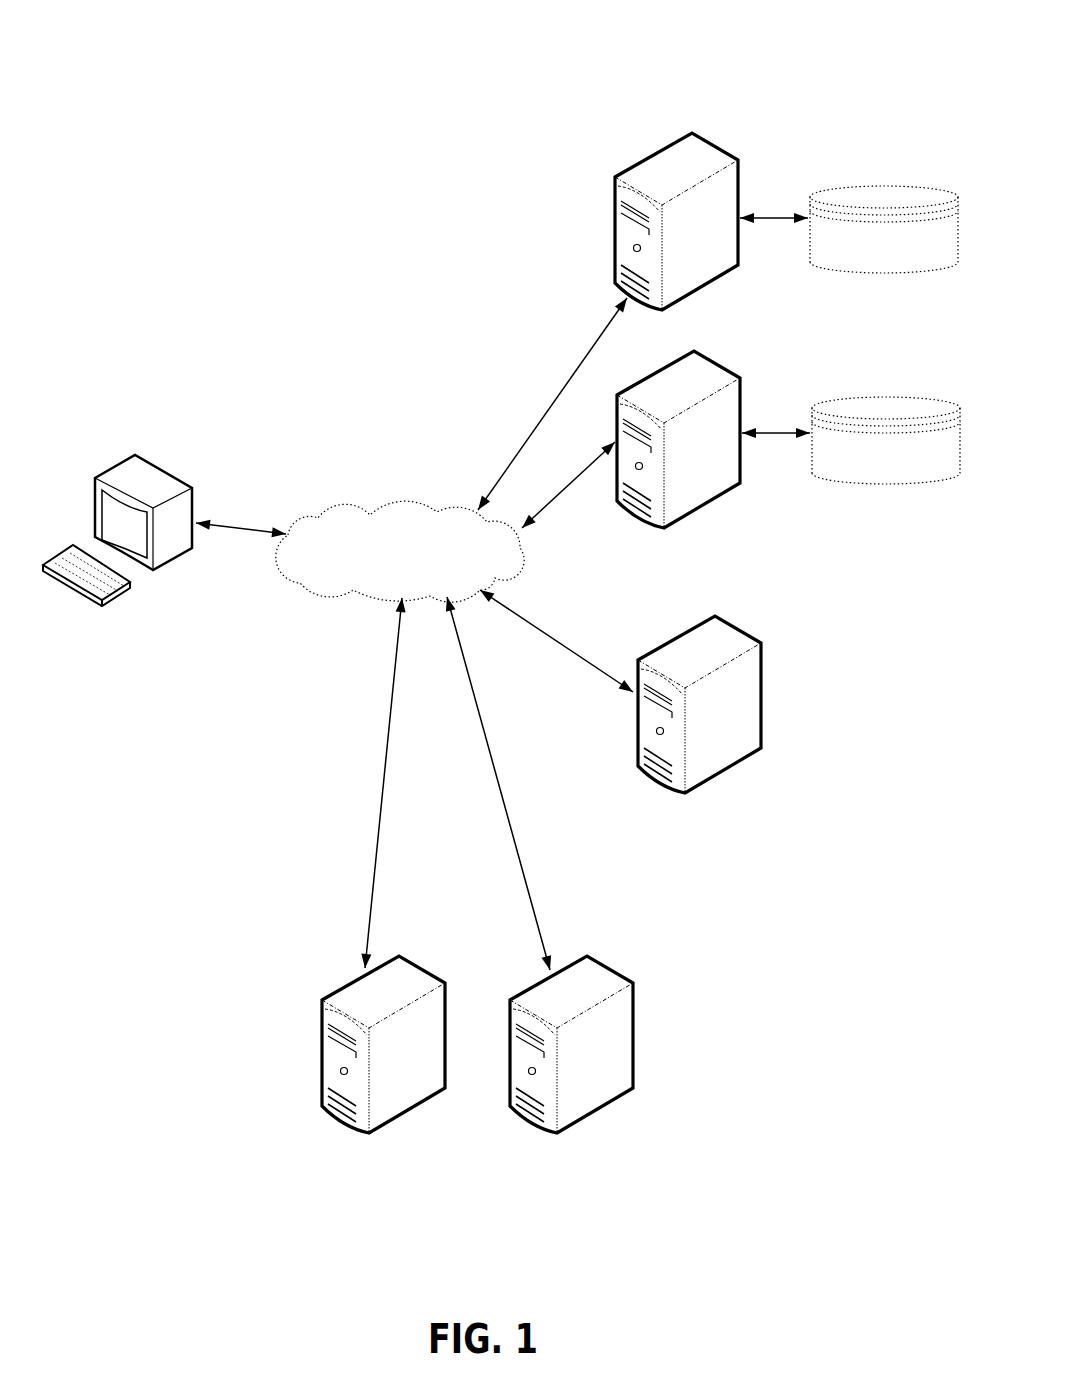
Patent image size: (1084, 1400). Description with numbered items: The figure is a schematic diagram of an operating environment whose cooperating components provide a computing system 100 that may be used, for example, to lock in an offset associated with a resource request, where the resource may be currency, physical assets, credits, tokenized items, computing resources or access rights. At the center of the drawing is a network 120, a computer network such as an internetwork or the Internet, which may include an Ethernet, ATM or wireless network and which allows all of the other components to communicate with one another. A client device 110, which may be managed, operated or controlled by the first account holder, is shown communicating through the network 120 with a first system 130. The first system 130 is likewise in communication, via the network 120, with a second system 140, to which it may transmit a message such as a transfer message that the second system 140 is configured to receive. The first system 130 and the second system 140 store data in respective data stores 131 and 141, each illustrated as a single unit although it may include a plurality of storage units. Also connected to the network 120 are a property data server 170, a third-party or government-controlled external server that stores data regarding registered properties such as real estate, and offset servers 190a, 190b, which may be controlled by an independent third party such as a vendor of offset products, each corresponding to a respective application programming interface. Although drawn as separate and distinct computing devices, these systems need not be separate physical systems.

The computing system 100 is at (742, 55).
The client device 110 is at (147, 460).
The network 120 is at (400, 551).
The first system 130 is at (637, 160).
The data store 131 is at (883, 185).
The second system 140 is at (720, 363).
The data store 141 is at (883, 390).
The property data server 170 is at (737, 627).
The offset server 190a is at (422, 968).
The offset server 190b is at (608, 968).